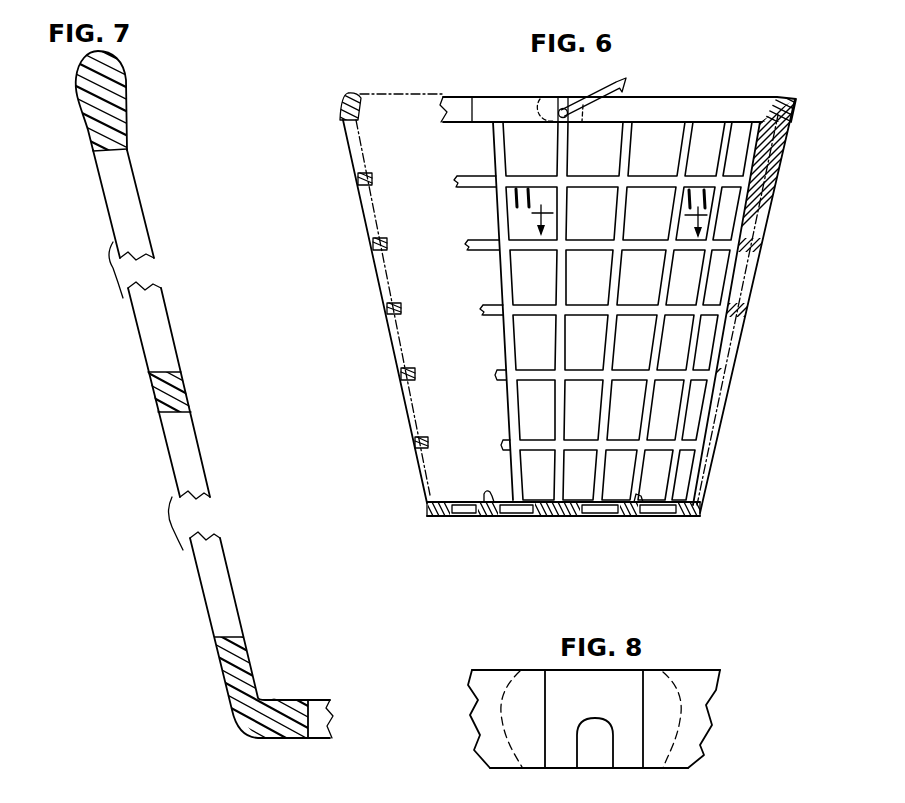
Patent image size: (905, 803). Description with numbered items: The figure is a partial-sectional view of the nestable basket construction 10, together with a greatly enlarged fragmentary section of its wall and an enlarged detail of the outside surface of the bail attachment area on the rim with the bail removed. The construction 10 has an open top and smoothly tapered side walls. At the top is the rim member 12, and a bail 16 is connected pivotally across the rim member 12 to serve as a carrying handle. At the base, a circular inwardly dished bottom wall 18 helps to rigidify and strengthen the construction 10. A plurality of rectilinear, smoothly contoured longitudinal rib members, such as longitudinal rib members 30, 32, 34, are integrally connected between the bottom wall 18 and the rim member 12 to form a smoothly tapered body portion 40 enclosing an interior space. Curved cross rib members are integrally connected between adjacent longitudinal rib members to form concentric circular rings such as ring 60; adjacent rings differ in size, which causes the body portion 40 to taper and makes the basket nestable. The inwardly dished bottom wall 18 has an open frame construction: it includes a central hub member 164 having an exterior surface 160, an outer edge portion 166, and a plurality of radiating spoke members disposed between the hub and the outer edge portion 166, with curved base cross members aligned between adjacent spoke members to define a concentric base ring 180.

In FIG. 6, the basket construction 10 is at (350, 68).
In FIG. 7, the basket construction 10 is at (131, 498).
In FIG. 6, the rim member 12 is at (494, 103).
In FIG. 7, the rim member 12 is at (80, 106).
In FIG. 8, the rim member 12 is at (693, 670).
In FIG. 6, the bail 16 is at (605, 82).
In FIG. 6, the bottom wall 18 is at (526, 530).
In FIG. 7, the bottom wall 18 is at (306, 745).
In FIG. 6, the longitudinal rib member 30 is at (708, 148).
In FIG. 6, the longitudinal rib member 32 is at (653, 145).
In FIG. 6, the longitudinal rib member 34 is at (553, 147).
In FIG. 6, the body portion 40 is at (754, 312).
In FIG. 6, the ring 60 is at (792, 186).
In FIG. 6, the exterior surface 160 is at (585, 528).
In FIG. 6, the central hub member 164 is at (549, 516).
In FIG. 6, the outer edge portion 166 is at (432, 516).
In FIG. 7, the outer edge portion 166 is at (228, 713).
In FIG. 6, the concentric base ring 180 is at (478, 499).